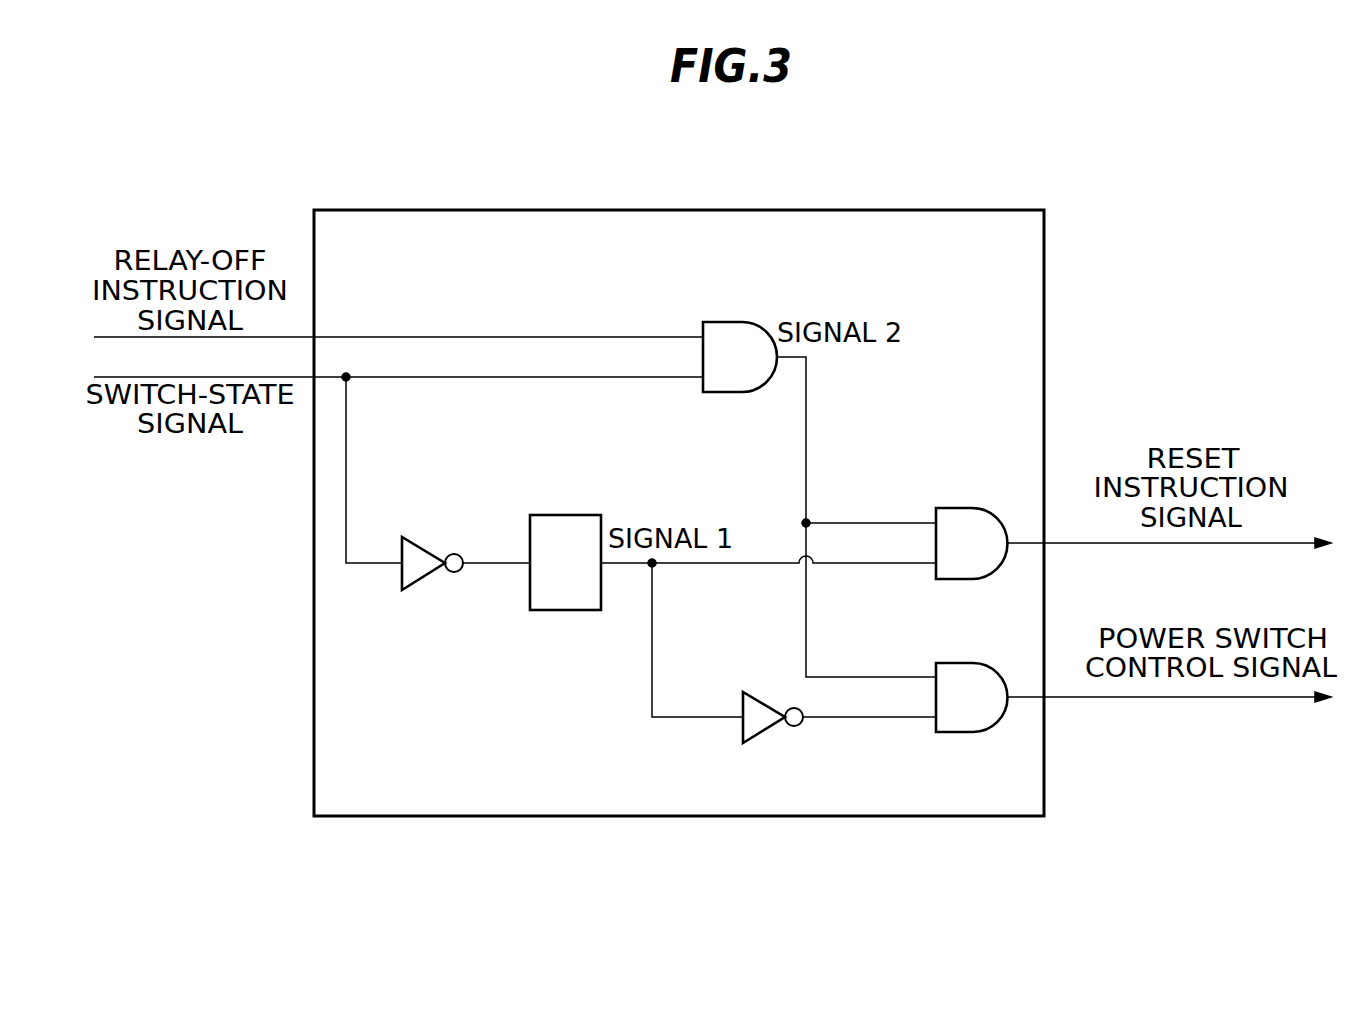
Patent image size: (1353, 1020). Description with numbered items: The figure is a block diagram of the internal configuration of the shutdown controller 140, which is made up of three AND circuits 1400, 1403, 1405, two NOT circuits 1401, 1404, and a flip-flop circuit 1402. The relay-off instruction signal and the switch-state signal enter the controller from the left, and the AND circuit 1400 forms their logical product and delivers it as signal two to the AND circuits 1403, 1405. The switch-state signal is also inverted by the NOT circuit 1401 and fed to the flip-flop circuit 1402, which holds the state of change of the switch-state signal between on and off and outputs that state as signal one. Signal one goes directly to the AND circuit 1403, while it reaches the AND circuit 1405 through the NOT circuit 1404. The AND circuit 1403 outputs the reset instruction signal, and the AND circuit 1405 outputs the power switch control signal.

The shutdown controller 140 is at (404, 210).
The AND circuit 1400 is at (754, 330).
The NOT circuit 1401 is at (420, 540).
The flip-flop circuit 1402 is at (565, 515).
The AND circuit 1403 is at (980, 508).
The NOT circuit 1404 is at (770, 694).
The AND circuit 1405 is at (980, 663).